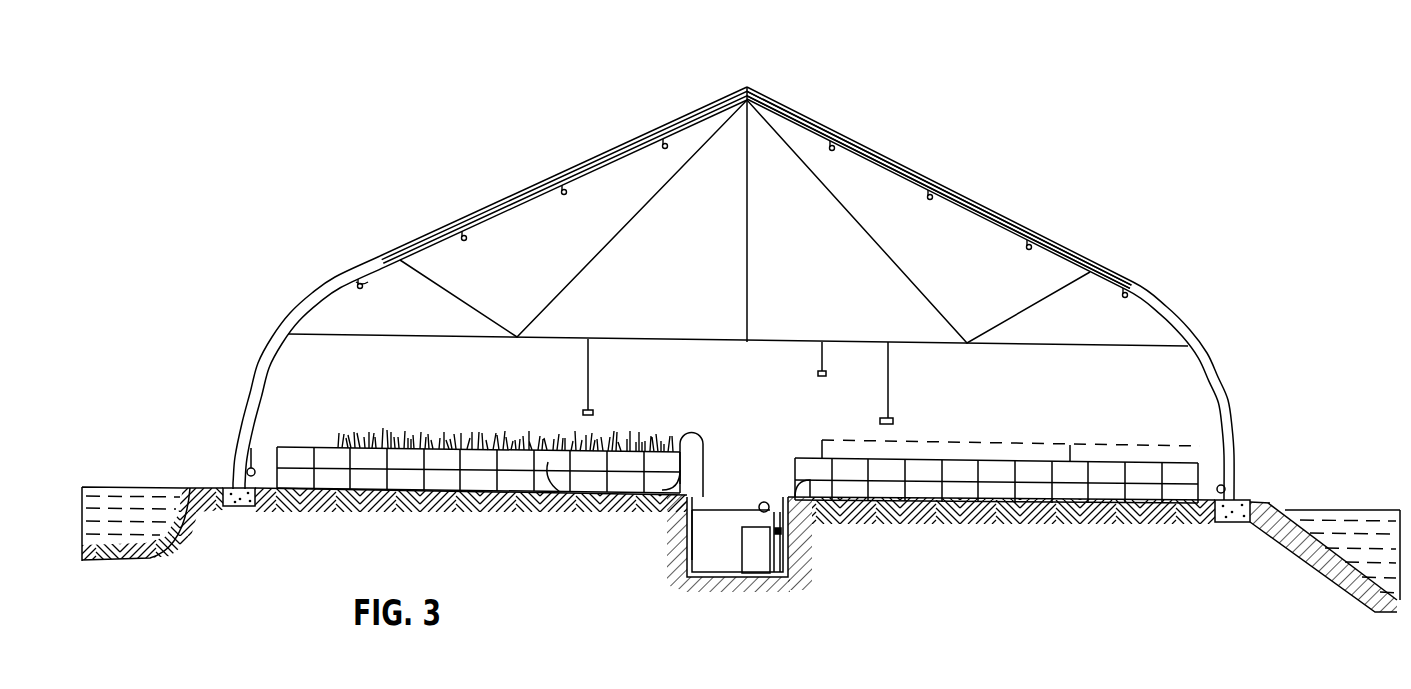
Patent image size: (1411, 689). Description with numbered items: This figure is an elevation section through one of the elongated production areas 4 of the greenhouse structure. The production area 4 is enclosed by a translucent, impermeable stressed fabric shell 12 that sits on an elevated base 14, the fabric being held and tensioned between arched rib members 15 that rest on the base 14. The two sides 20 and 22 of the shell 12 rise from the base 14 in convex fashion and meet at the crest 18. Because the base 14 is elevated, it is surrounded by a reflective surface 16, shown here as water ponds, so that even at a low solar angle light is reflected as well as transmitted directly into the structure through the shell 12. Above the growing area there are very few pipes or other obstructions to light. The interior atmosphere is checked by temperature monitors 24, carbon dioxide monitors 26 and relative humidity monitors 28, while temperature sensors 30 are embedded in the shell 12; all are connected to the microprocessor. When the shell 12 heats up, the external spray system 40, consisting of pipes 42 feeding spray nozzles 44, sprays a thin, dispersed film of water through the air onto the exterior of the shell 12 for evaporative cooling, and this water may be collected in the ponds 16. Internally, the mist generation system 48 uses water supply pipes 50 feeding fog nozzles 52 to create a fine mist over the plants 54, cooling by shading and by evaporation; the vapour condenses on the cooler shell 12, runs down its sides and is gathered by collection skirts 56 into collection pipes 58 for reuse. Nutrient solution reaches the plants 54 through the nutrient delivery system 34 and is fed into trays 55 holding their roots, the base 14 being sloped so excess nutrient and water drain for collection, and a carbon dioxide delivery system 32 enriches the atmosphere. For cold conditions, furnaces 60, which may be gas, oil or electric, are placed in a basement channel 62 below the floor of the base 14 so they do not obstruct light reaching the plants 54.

The production area 4 is at (713, 393).
The stressed fabric shell 12 is at (302, 372).
The base 14 is at (444, 494).
The arched rib member 15 is at (266, 388).
The reflective surface 16 is at (148, 487).
The crest 18 is at (756, 90).
The shell side 20 is at (1262, 401).
The shell side 22 is at (483, 288).
The temperature monitor 24 is at (595, 410).
The carbon dioxide monitor 26 is at (816, 373).
The relative humidity monitor 28 is at (892, 418).
The temperature sensor 30 is at (896, 164).
The carbon dioxide delivery system 32 is at (789, 540).
The nutrient delivery system 34 is at (704, 440).
The external spray system 40 is at (743, 210).
The pipe 42 is at (489, 207).
The spray nozzle 44 is at (407, 252).
The internal mist generation system 48 is at (602, 194).
The water supply pipe 50 is at (364, 285).
The fog nozzle 52 is at (365, 292).
The plants 54 is at (408, 428).
The tray 55 is at (548, 462).
The collection skirt 56 is at (252, 448).
The collection pipe 58 is at (255, 506).
The furnace 60 is at (722, 578).
The basement channel 62 is at (720, 553).